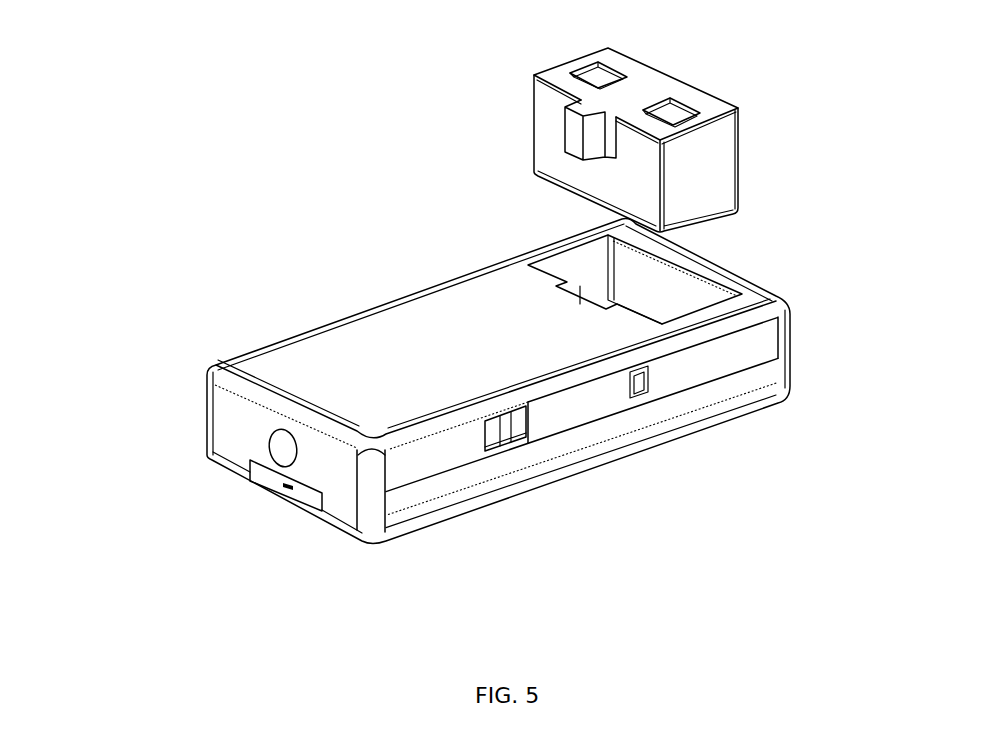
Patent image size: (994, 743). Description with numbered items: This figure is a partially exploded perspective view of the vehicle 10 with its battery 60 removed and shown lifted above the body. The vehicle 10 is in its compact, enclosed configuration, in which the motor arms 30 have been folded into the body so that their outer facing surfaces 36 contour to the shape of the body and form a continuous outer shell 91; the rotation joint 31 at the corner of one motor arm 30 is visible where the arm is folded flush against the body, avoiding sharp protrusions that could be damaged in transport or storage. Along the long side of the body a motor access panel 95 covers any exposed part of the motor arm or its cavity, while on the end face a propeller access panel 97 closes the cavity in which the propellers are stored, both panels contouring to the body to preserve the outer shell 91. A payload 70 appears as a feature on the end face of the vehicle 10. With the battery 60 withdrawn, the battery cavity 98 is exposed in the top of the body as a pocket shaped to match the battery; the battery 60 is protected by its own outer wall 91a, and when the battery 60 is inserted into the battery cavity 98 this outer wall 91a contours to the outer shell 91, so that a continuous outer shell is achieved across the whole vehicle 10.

The vehicle 10 is at (489, 315).
The motor arm 30 is at (527, 381).
The rotation joint 31 is at (317, 524).
The outer facing surfaces 36 is at (548, 445).
The battery 60 is at (724, 140).
The payload 70 is at (187, 475).
The outer shell 91 is at (721, 380).
The outer wall 91a is at (794, 87).
The motor access panel 95 is at (636, 502).
The propeller access panel 97 is at (230, 519).
The battery cavity 98 is at (721, 262).